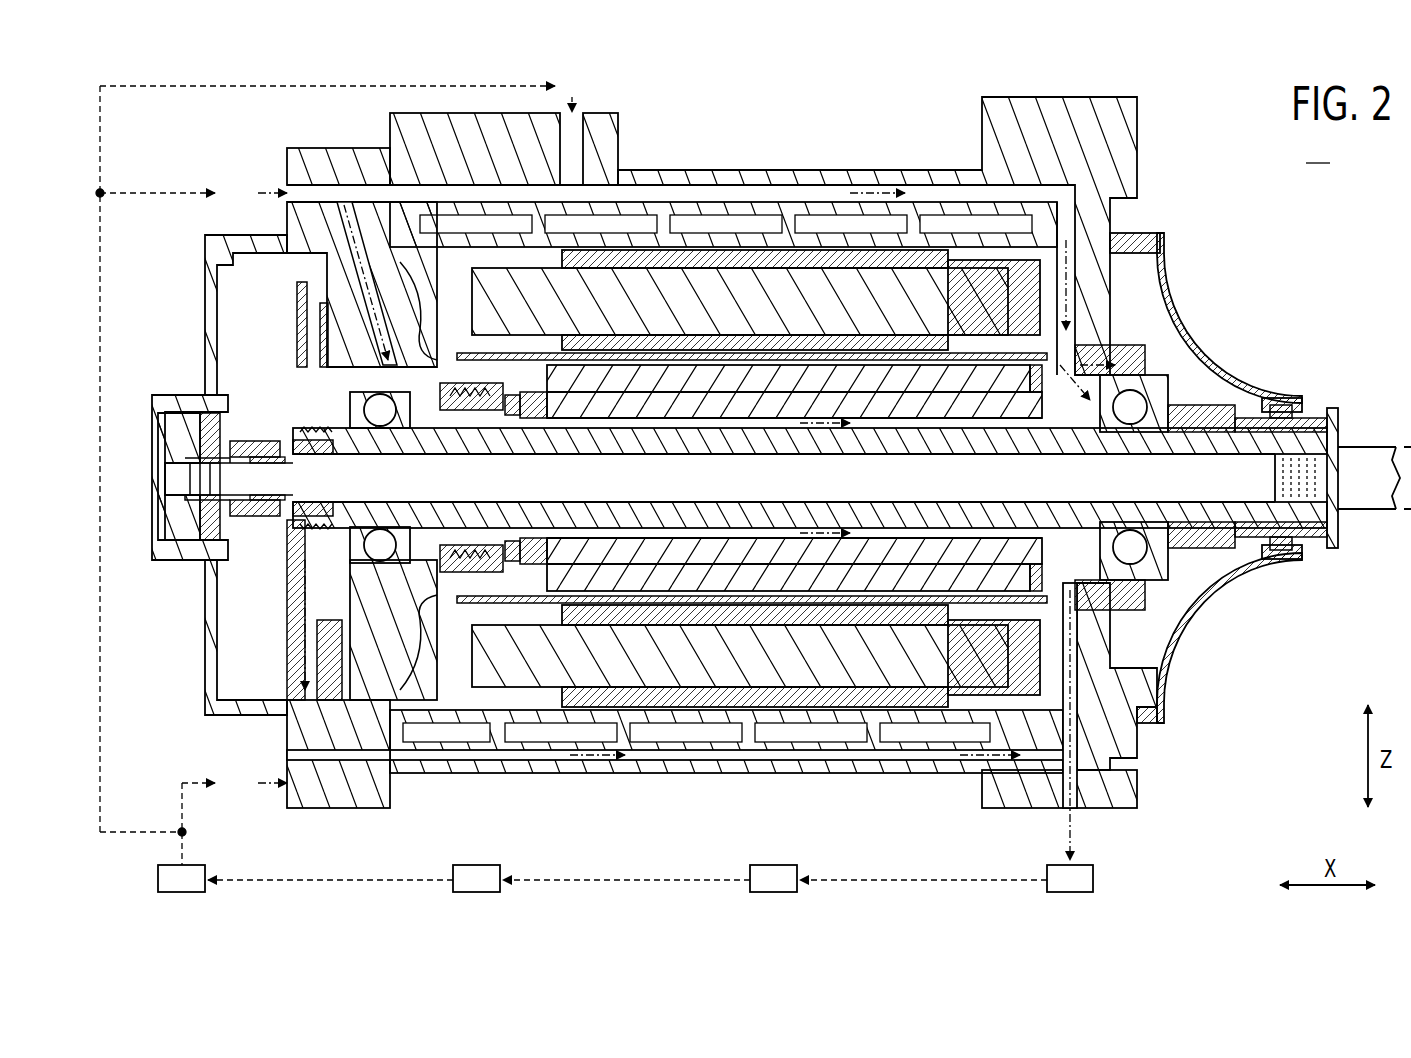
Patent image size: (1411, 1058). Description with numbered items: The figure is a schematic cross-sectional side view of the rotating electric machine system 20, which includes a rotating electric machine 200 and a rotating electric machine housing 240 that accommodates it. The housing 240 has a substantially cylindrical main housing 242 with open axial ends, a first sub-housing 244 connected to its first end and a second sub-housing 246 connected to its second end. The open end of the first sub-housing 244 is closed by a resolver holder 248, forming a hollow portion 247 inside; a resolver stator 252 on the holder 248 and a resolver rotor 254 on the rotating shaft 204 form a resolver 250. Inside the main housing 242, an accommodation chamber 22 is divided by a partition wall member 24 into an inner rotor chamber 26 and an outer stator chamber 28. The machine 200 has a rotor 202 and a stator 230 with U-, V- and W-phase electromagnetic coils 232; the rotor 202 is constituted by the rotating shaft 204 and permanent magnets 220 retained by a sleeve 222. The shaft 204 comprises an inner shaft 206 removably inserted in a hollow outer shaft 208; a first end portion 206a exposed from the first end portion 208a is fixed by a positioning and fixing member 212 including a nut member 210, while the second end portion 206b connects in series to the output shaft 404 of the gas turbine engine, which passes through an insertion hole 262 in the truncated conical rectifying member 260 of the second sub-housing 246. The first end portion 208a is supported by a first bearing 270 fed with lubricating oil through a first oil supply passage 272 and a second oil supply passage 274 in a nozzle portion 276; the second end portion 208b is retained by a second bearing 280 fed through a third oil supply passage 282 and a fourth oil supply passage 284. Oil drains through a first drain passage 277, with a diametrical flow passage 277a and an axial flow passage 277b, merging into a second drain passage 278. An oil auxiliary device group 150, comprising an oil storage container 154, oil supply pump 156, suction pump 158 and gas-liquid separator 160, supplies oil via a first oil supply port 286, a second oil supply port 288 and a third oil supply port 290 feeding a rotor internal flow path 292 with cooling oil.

The rotating electric machine system 20 is at (781, 452).
The accommodation chamber 22 is at (505, 812).
The partition wall member 24 is at (528, 595).
The rotor chamber 26 is at (510, 648).
The stator chamber 28 is at (465, 697).
The oil auxiliary device group 150 is at (1097, 880).
The oil storage container 154 is at (498, 865).
The oil supply pump 156 is at (200, 865).
The suction pump 158 is at (1090, 865).
The gas-liquid separator 160 is at (765, 865).
The rotating electric machine 200 is at (965, 268).
The rotor 202 is at (968, 372).
The rotating shaft 204 is at (1295, 648).
The inner shaft 206 is at (1220, 540).
The first end portion of the inner shaft 206a is at (240, 497).
The second end portion of the inner shaft 206b is at (1197, 488).
The outer shaft 208 is at (1262, 545).
The first end portion of the outer shaft 208a is at (330, 462).
The second end portion of the outer shaft 208b is at (1308, 430).
The nut member 210 is at (253, 448).
The positioning and fixing member 212 is at (240, 435).
The permanent magnets 220 is at (702, 570).
The sleeve 222 is at (732, 560).
The stator 230 is at (838, 255).
The electromagnetic coils 232 is at (752, 285).
The rotating electric machine housing 240 is at (1140, 136).
The main housing 242 is at (390, 133).
The first sub-housing 244 is at (303, 163).
The second sub-housing 246 is at (1160, 716).
The hollow portion 247 is at (205, 682).
The resolver holder 248 is at (205, 325).
The resolver 250 is at (197, 626).
The resolver stator 252 is at (170, 515).
The resolver rotor 254 is at (215, 505).
The rectifying member 260 is at (1176, 305).
The insertion hole 262 is at (1280, 400).
The first bearing 270 is at (392, 427).
The first oil supply passage 272 is at (367, 262).
The second oil supply passage 274 is at (322, 325).
The nozzle portion 276 is at (297, 351).
The first drain passage 277 is at (936, 757).
The flow passage 277a is at (318, 740).
The flow passage 277b is at (905, 762).
The second drain passage 278 is at (1065, 779).
The second bearing 280 is at (1145, 432).
The third oil supply passage 282 is at (680, 196).
The fourth oil supply passage 284 is at (1125, 383).
The first oil supply port 286 is at (290, 190).
The second oil supply port 288 is at (585, 112).
The third oil supply port 290 is at (287, 802).
The rotor internal flow path 292 is at (888, 420).
The output shaft 404 is at (1381, 455).